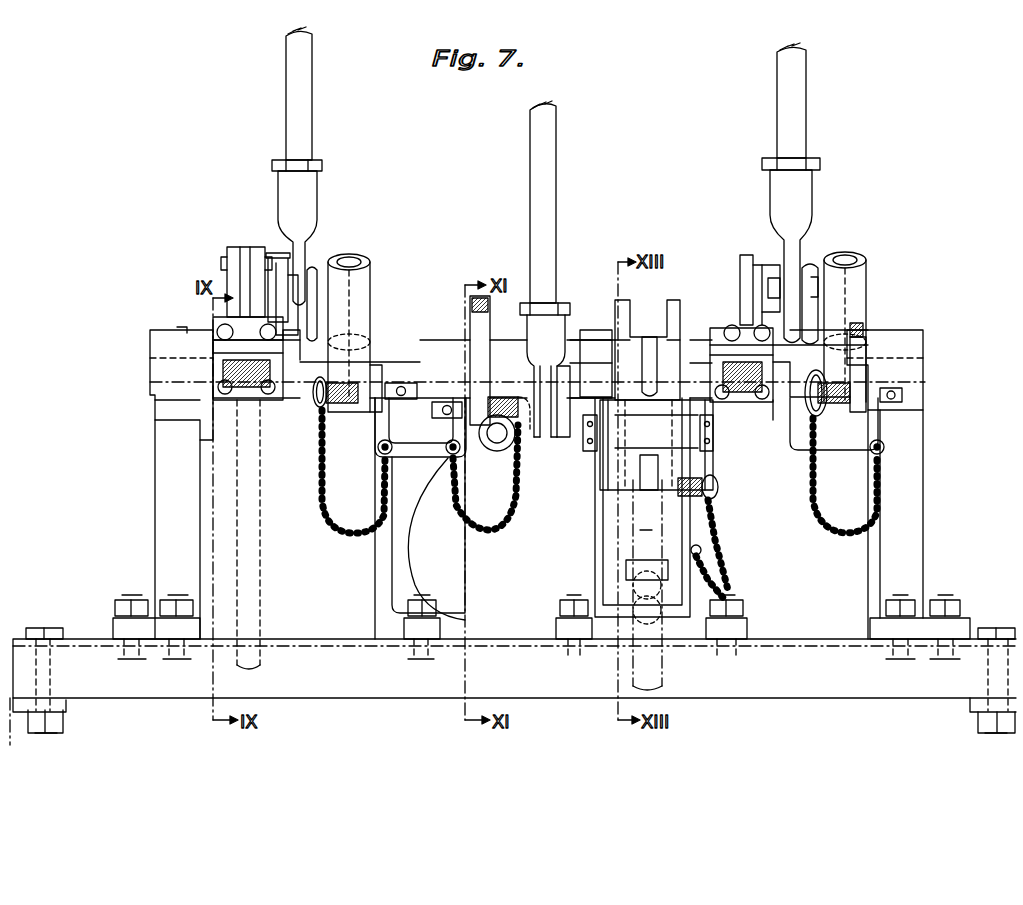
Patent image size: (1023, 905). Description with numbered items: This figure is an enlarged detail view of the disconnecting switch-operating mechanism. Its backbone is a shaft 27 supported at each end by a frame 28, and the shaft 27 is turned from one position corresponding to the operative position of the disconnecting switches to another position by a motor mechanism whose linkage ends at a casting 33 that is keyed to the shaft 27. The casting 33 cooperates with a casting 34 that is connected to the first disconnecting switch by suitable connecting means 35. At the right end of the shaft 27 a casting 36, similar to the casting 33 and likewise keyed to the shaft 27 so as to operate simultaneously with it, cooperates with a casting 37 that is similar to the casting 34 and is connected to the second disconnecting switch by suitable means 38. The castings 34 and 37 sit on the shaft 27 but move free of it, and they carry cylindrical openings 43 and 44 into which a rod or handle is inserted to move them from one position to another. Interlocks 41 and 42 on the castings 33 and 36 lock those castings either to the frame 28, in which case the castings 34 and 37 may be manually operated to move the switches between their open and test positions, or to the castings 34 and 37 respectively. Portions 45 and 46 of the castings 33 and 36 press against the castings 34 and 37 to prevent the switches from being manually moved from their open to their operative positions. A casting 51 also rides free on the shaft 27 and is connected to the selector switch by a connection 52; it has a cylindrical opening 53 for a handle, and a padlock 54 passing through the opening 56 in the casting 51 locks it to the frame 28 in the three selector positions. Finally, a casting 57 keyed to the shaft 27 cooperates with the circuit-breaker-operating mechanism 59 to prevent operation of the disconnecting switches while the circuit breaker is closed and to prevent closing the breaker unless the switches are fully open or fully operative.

The shaft 27 is at (158, 375).
The frame 28 is at (158, 495).
The casting 33 is at (235, 247).
The casting 34 is at (316, 262).
The connecting means 35 is at (312, 130).
The casting 36 is at (746, 255).
The casting 37 is at (810, 262).
The connecting means 38 is at (800, 118).
The interlock 41 is at (258, 398).
The interlock 42 is at (745, 405).
The cylindrical opening 43 is at (350, 258).
The cylindrical opening 44 is at (862, 242).
The portion 45 is at (278, 253).
The portion 46 is at (768, 265).
The casting 51 is at (488, 340).
The connection 52 is at (548, 200).
The cylindrical opening 53 is at (495, 450).
The padlock 54 is at (522, 422).
The opening 56 is at (678, 315).
The casting 57 is at (648, 333).
The circuit-breaker-operating mechanism 59 is at (700, 455).